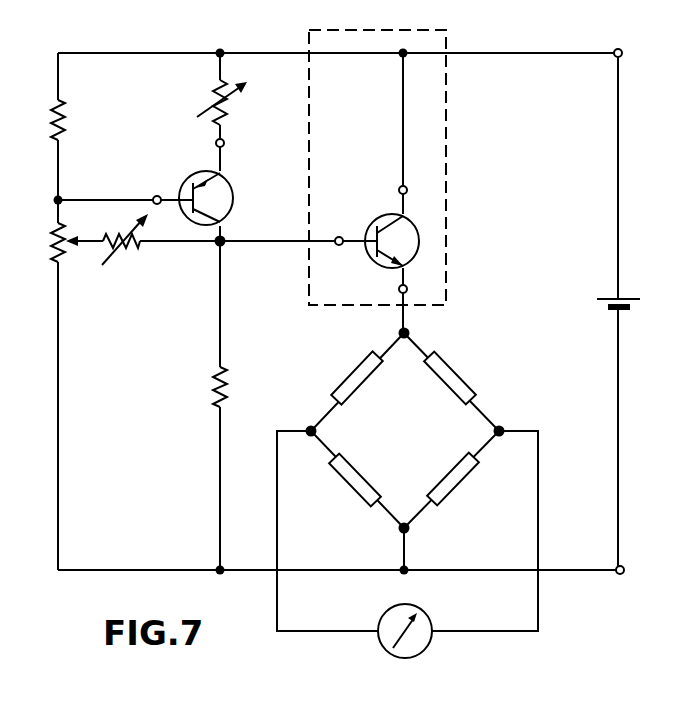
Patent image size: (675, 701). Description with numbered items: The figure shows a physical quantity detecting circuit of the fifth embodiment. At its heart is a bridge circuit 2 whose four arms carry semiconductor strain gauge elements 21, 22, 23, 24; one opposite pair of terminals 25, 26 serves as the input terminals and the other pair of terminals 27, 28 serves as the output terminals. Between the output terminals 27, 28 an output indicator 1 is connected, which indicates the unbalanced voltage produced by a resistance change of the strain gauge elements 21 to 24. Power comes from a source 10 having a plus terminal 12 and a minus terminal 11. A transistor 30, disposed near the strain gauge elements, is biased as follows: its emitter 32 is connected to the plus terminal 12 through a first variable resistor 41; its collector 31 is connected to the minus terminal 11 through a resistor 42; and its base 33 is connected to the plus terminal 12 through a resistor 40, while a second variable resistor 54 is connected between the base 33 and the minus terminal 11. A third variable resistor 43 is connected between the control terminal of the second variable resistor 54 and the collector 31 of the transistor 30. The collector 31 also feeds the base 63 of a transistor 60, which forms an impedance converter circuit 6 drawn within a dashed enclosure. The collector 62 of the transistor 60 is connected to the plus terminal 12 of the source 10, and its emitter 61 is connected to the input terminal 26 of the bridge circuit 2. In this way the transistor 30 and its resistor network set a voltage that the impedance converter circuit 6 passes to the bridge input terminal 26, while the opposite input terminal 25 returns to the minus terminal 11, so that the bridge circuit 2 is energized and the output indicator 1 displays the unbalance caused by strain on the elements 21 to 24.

The output indicator 1 is at (427, 618).
The bridge circuit 2 is at (411, 432).
The impedance converter circuit 6 is at (306, 40).
The source 10 is at (610, 296).
The minus terminal 11 is at (616, 566).
The plus terminal 12 is at (621, 48).
The semiconductor strain gauge element 21 is at (346, 376).
The semiconductor strain gauge element 22 is at (355, 486).
The semiconductor strain gauge element 23 is at (465, 486).
The semiconductor strain gauge element 24 is at (458, 367).
The input terminal 25 is at (400, 531).
The input terminal 26 is at (410, 333).
The output terminal 27 is at (308, 429).
The output terminal 28 is at (501, 429).
The transistor 30 is at (234, 195).
The collector 31 is at (223, 245).
The emitter 32 is at (216, 143).
The base 33 is at (156, 196).
The resistor 40 is at (52, 125).
The first variable resistor 41 is at (226, 118).
The resistor 42 is at (214, 401).
The third variable resistor 43 is at (138, 248).
The second variable resistor 54 is at (50, 240).
The transistor 60 is at (374, 218).
The emitter 61 is at (399, 290).
The collector 62 is at (399, 192).
The base 63 is at (340, 245).